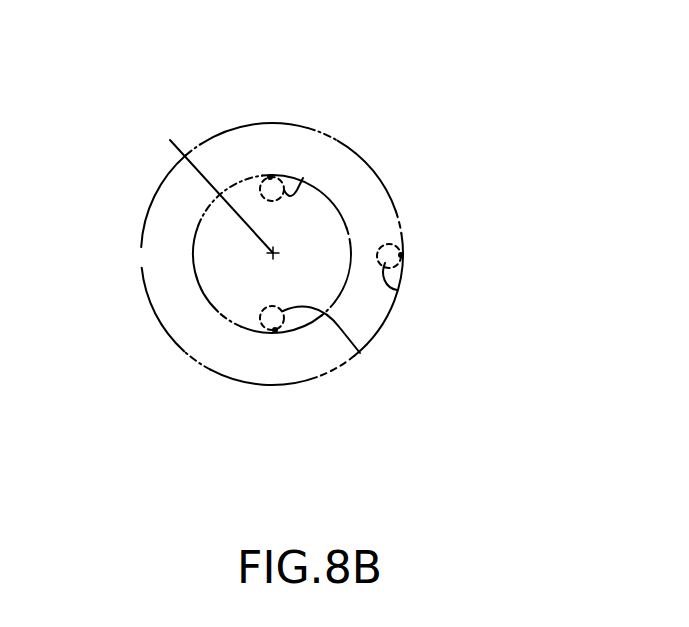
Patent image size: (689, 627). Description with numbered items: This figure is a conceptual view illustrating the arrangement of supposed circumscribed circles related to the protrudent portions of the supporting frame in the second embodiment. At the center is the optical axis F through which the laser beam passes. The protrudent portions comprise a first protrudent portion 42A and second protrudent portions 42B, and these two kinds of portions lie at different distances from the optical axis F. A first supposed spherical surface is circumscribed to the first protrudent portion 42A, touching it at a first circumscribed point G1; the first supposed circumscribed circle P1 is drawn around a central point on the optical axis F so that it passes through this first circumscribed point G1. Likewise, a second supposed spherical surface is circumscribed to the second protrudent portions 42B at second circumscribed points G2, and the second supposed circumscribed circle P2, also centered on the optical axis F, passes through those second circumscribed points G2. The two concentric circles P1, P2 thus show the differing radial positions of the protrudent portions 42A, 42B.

The optical axis F is at (170, 140).
The first supposed circumscribed circle P1 is at (372, 170).
The second supposed circumscribed circle P2 is at (203, 292).
The first circumscribed point G1 is at (401, 255).
The second circumscribed points G2 is at (270, 176).
The first protrudent portion 42A is at (397, 290).
The second protrudent portions 42B is at (303, 178).